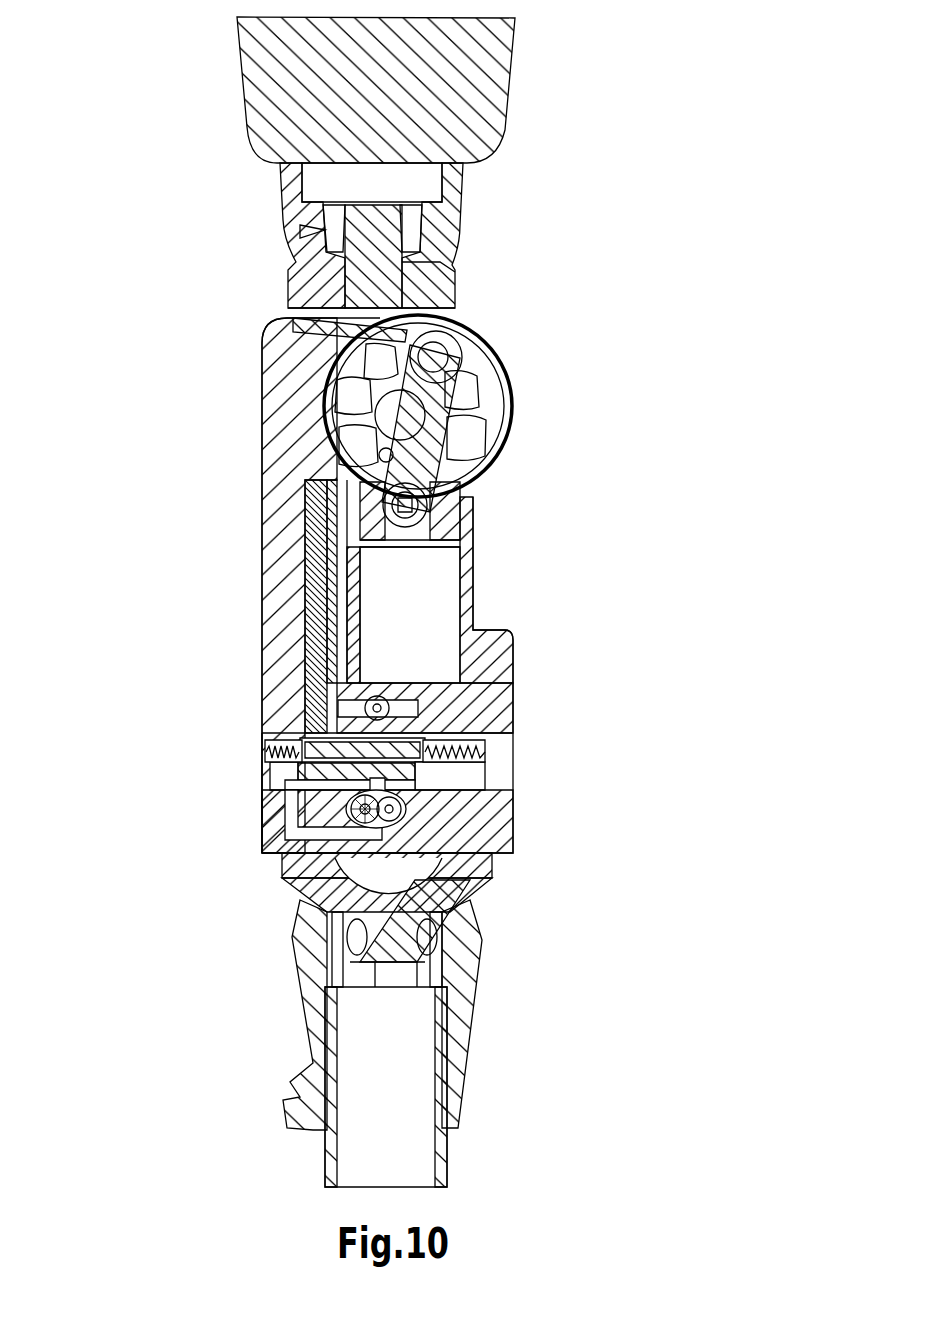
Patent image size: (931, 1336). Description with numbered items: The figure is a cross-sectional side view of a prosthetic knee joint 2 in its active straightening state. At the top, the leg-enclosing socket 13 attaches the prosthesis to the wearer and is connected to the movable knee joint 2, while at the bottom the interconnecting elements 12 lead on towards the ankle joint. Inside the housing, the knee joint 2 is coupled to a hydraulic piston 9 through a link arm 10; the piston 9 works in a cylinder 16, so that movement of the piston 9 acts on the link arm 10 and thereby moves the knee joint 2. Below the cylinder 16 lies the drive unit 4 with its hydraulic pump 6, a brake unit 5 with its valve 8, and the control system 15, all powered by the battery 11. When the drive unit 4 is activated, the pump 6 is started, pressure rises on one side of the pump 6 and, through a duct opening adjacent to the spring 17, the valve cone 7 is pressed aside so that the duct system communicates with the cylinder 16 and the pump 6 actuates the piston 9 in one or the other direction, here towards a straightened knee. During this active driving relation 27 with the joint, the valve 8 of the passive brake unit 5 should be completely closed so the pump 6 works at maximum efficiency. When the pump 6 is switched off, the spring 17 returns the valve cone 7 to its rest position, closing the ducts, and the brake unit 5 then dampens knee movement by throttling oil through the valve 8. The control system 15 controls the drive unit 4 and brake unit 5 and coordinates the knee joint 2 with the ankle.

The knee joint 2 is at (578, 321).
The drive unit 4 is at (250, 732).
The brake unit 5 is at (358, 695).
The hydraulic pump 6 is at (490, 822).
The valve cone 7 is at (400, 713).
The valve 8 is at (398, 690).
The hydraulic piston 9 is at (460, 522).
The link arm 10 is at (480, 400).
The battery 11 is at (275, 411).
The interconnecting elements 12 is at (556, 1077).
The socket 13 is at (578, 121).
The control system 15 is at (302, 508).
The cylinder 16 is at (410, 620).
The spring 17 is at (265, 746).
The driving relation 27 is at (336, 733).